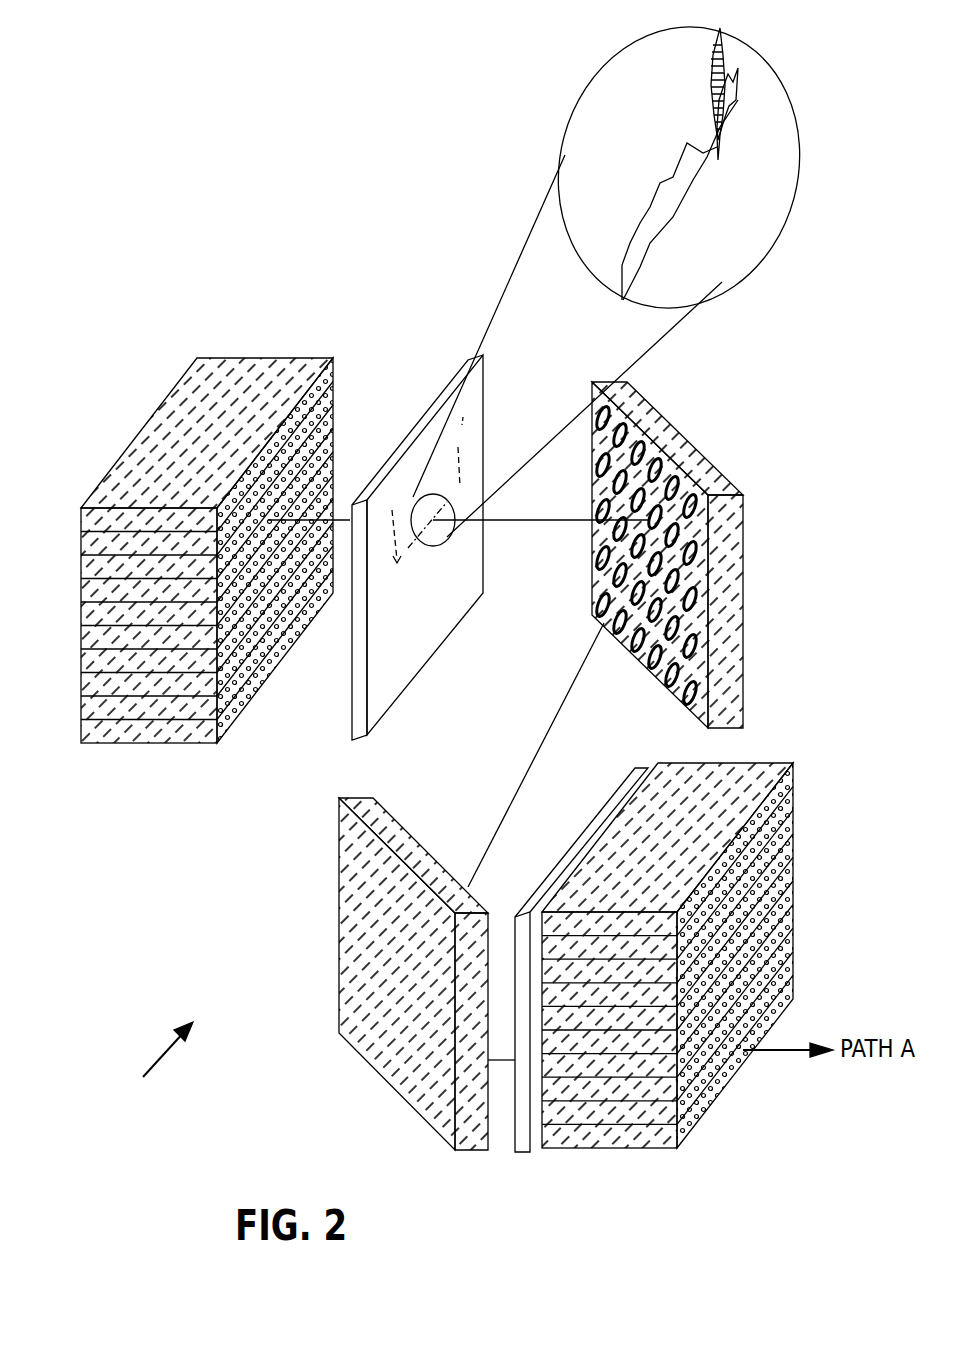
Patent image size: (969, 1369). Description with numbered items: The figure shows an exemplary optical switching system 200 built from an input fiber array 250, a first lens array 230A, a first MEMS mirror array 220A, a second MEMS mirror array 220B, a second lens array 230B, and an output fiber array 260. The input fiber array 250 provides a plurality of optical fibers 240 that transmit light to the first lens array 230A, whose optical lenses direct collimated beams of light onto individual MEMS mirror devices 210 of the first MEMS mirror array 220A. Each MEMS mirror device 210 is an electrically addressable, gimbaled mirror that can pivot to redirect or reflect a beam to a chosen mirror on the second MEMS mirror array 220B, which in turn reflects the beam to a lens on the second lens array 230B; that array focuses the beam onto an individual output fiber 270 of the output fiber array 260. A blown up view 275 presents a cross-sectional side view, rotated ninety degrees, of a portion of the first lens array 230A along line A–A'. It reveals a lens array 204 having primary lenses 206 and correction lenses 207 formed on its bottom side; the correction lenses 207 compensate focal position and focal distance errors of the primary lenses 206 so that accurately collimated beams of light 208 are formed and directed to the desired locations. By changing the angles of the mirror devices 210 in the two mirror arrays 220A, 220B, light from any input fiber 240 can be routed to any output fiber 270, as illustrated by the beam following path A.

The optical switching system 200 is at (151, 1070).
The lens array 204 is at (740, 94).
The primary lenses 206 is at (650, 210).
The correction lenses 207 is at (640, 268).
The collimated beams of light 208 is at (722, 50).
The MEMS mirror devices 210 is at (652, 407).
The first MEMS mirror array 220A is at (715, 550).
The second MEMS mirror array 220B is at (339, 942).
The first lens array 230A is at (478, 402).
The second lens array 230B is at (636, 768).
The optical fibers 240 is at (268, 520).
The input fiber array 250 is at (228, 362).
The output fiber array 260 is at (762, 760).
The output fibers 270 is at (776, 1020).
The blown up view 275 is at (800, 165).